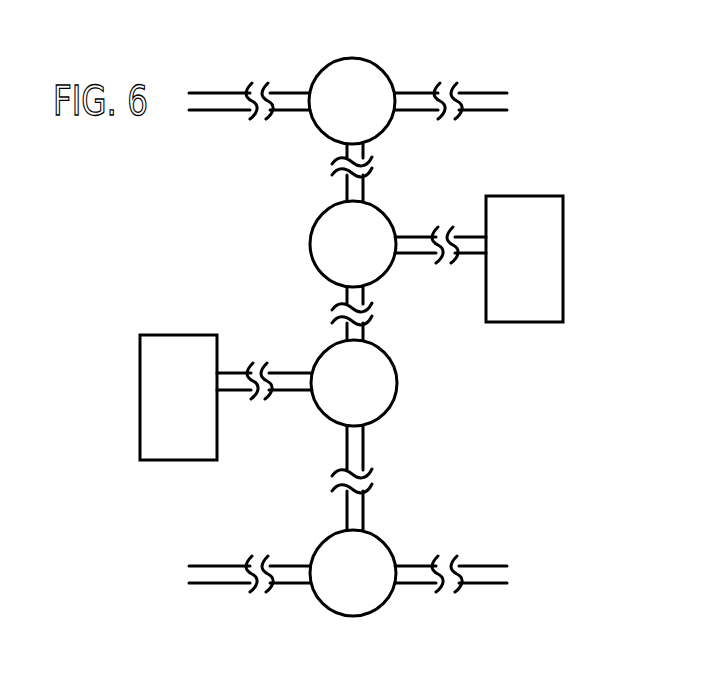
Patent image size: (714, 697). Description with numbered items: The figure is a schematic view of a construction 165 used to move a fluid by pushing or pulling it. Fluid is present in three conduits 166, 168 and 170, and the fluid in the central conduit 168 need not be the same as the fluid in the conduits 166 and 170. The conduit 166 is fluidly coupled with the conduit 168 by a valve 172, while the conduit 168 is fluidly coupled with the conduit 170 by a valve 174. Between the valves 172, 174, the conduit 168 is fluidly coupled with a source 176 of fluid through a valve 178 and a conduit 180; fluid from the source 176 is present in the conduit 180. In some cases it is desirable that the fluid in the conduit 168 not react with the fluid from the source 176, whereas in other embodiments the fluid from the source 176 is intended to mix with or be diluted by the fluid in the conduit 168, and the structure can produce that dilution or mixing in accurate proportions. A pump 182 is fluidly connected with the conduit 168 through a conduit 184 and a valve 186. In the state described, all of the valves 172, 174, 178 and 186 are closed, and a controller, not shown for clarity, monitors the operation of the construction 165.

The construction 165 is at (218, 635).
The conduit 166 is at (287, 92).
The conduit 168 is at (343, 152).
The conduit 170 is at (482, 583).
The valve 172 is at (390, 69).
The valve 174 is at (382, 540).
The source of fluid 176 is at (140, 397).
The valve 178 is at (398, 382).
The conduit 180 is at (295, 370).
The pump 182 is at (563, 255).
The conduit 184 is at (470, 236).
The valve 186 is at (383, 275).